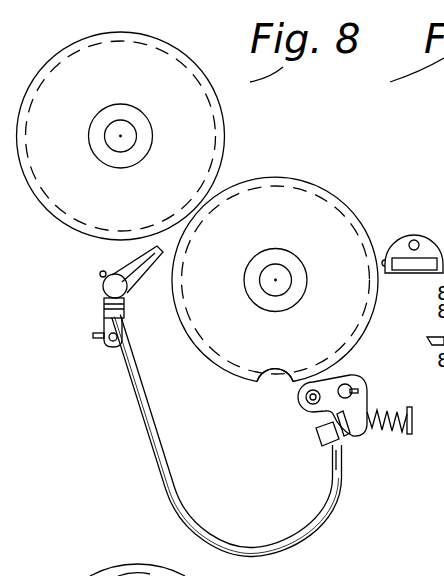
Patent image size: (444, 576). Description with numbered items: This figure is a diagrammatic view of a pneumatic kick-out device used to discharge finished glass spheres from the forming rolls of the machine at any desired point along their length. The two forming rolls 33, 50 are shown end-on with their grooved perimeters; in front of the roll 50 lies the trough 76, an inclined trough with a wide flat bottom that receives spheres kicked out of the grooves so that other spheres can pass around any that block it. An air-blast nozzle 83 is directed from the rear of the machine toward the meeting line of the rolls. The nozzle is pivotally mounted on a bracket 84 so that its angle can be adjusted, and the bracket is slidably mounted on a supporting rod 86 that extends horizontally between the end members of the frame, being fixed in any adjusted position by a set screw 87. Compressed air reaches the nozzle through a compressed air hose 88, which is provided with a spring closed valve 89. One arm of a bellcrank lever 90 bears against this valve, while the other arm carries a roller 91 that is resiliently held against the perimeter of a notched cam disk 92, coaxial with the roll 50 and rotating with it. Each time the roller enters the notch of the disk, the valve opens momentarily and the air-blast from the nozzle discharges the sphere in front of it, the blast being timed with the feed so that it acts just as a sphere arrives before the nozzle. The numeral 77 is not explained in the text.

The roll 33 is at (222, 129).
The roll 50 is at (345, 203).
The notched cam disk 92 is at (232, 366).
The trough 76 is at (412, 269).
The bellcrank lever 90 is at (367, 401).
The roller 91 is at (312, 410).
The spring closed valve 89 is at (318, 442).
The compressed air hose 88 is at (332, 472).
The air-blast nozzle 83 is at (127, 264).
The bracket 84 is at (105, 305).
The supporting rod 86 is at (116, 352).
The set screw 87 is at (94, 341).
The wheel 77 is at (160, 570).